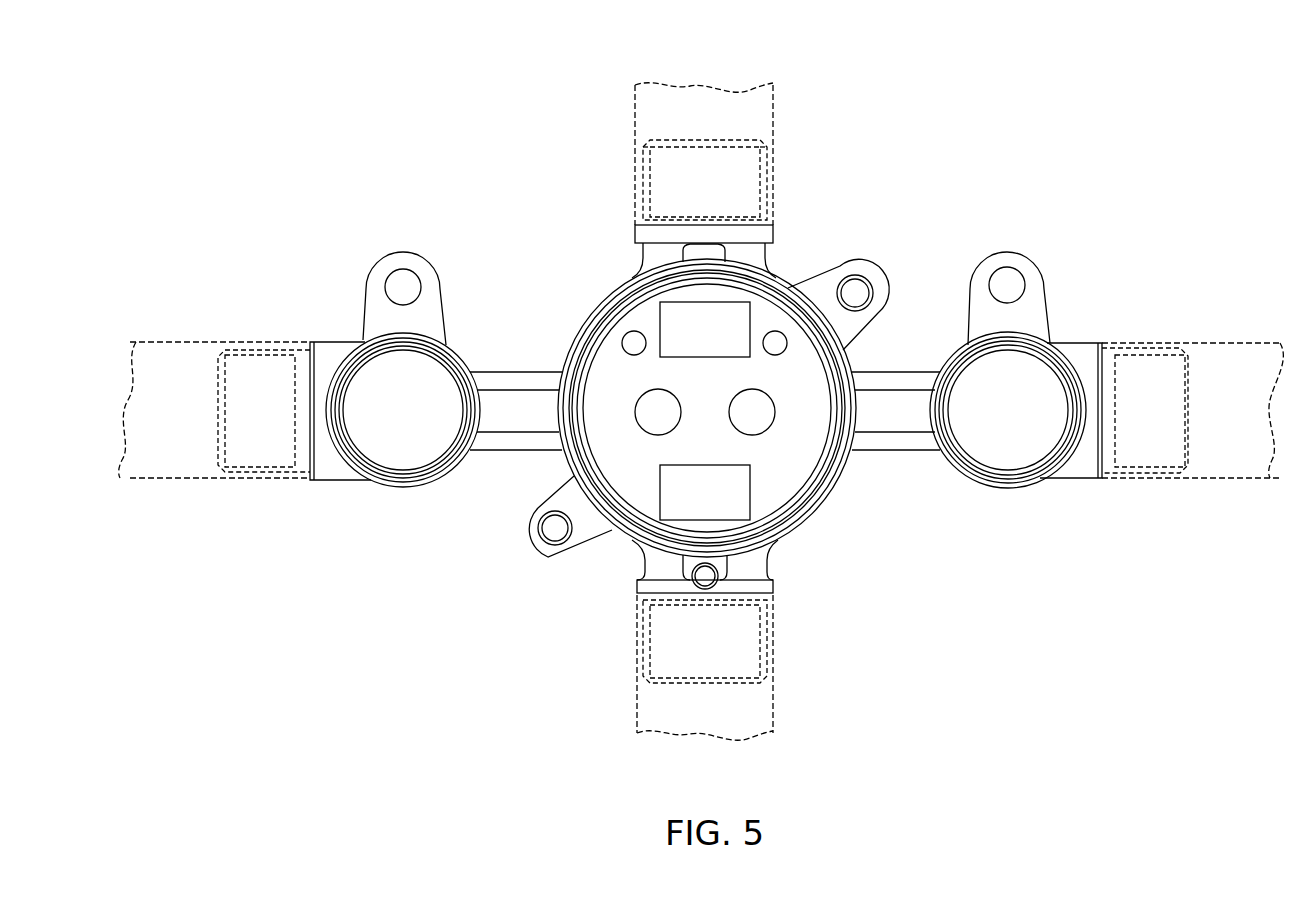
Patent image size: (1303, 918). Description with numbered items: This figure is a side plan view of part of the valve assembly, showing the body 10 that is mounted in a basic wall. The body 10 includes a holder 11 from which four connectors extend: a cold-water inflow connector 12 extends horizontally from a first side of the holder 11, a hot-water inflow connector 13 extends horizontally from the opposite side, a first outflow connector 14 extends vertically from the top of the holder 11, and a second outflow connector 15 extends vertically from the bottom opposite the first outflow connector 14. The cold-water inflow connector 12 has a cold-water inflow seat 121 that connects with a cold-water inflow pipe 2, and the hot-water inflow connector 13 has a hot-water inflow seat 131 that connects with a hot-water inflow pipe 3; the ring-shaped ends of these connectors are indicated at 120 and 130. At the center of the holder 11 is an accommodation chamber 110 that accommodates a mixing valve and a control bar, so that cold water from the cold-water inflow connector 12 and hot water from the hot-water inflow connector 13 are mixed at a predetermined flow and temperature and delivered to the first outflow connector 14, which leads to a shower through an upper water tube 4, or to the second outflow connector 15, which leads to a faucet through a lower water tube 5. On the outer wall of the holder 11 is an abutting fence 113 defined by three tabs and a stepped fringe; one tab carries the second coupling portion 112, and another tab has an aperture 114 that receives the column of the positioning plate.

The cold-water inflow pipe 2 is at (162, 342).
The hot-water inflow pipe 3 is at (1197, 342).
The upper water tube 4 is at (773, 132).
The lower water tube 5 is at (775, 666).
The body 10 is at (706, 398).
The holder 11 is at (858, 293).
The cold-water inflow connector 12 is at (513, 372).
The hot-water inflow connector 13 is at (898, 372).
The first outflow connector 14 is at (767, 203).
The second outflow connector 15 is at (645, 630).
The accommodation chamber 110 is at (620, 460).
The second coupling portion 112 is at (553, 538).
The abutting fence 113 is at (582, 533).
The aperture 114 is at (717, 573).
The first ring portion 120 is at (410, 488).
The cold-water inflow seat 121 is at (270, 478).
The second ring portion 130 is at (1005, 488).
The hot-water inflow seat 131 is at (1147, 474).